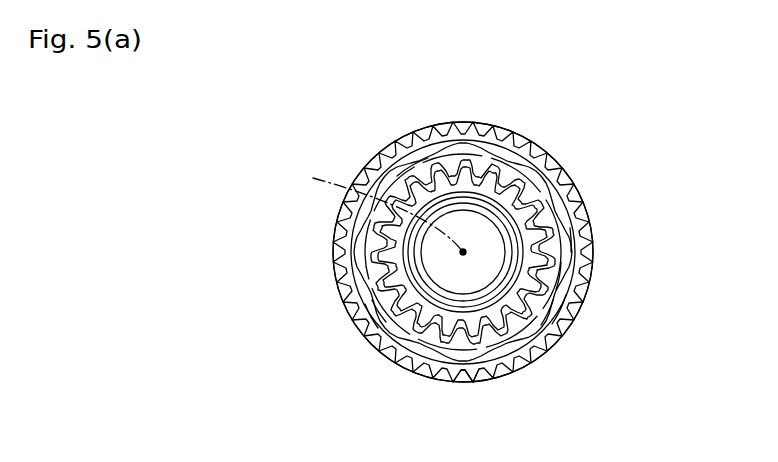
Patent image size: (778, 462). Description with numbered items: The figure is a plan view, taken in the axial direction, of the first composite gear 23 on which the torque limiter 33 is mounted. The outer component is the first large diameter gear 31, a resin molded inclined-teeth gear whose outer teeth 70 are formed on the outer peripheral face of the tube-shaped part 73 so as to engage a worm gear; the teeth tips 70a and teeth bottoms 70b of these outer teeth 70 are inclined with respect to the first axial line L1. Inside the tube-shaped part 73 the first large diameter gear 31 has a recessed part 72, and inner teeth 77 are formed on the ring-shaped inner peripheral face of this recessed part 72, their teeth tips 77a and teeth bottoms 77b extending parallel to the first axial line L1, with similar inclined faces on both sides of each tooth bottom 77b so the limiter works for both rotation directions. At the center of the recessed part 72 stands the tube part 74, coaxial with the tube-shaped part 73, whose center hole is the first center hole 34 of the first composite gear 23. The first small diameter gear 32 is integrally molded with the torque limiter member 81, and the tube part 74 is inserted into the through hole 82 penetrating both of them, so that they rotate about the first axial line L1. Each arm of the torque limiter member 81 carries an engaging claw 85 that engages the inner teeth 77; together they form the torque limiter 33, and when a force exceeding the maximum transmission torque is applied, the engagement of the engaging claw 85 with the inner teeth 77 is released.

The first composite gear 23 is at (655, 172).
The first large diameter gear 31 is at (320, 285).
The first small diameter gear 32 is at (370, 227).
The torque limiter 33 is at (409, 165).
The first center hole 34 is at (497, 259).
The outer teeth 70 is at (388, 372).
The teeth tips 70a is at (474, 378).
The teeth bottoms 70b is at (463, 371).
The recessed part 72 is at (362, 319).
The tube-shaped part 73 is at (349, 321).
The tube part 74 is at (462, 197).
The inner teeth 77 is at (530, 326).
The teeth tips 77a is at (555, 277).
The teeth bottoms 77b is at (550, 320).
The torque limiter member 81 is at (572, 238).
The through hole 82 is at (495, 220).
The engaging claw 85 is at (551, 312).
The first axial line L1 is at (374, 201).